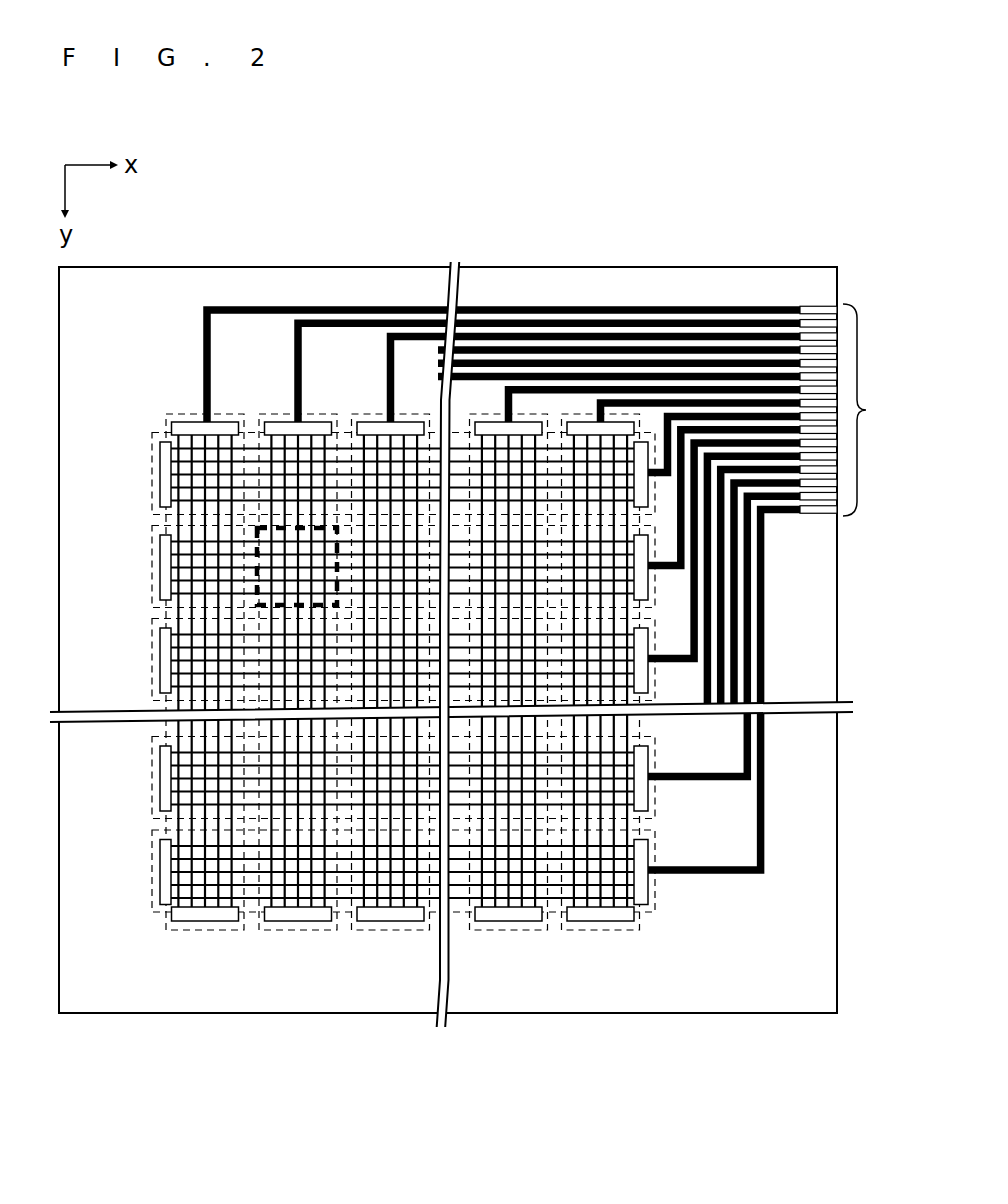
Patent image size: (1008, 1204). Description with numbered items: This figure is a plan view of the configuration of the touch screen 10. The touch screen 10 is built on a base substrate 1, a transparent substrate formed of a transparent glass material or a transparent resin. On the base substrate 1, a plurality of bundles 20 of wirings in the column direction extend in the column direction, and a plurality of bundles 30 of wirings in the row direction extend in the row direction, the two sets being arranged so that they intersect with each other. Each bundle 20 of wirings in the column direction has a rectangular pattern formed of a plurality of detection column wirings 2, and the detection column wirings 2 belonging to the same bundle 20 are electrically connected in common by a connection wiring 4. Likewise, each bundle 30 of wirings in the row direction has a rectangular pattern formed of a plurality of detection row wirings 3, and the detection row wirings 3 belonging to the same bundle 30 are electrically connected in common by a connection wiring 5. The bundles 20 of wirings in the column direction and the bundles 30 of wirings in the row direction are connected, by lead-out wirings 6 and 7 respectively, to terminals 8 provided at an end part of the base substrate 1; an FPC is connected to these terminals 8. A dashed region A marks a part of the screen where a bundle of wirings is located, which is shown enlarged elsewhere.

The base substrate 1 is at (765, 268).
The detection column wiring 2 is at (177, 822).
The detection row wiring 3 is at (250, 898).
The connection wiring 4 is at (190, 421).
The connection wiring 5 is at (160, 887).
The lead-out wiring 6 is at (203, 346).
The lead-out wiring 7 is at (727, 875).
The terminal 8 is at (844, 410).
The touch screen 10 is at (648, 210).
The bundle of wirings in the column direction 20 is at (207, 930).
The bundle of wirings in the row direction 30 is at (150, 863).
The region A is at (258, 565).